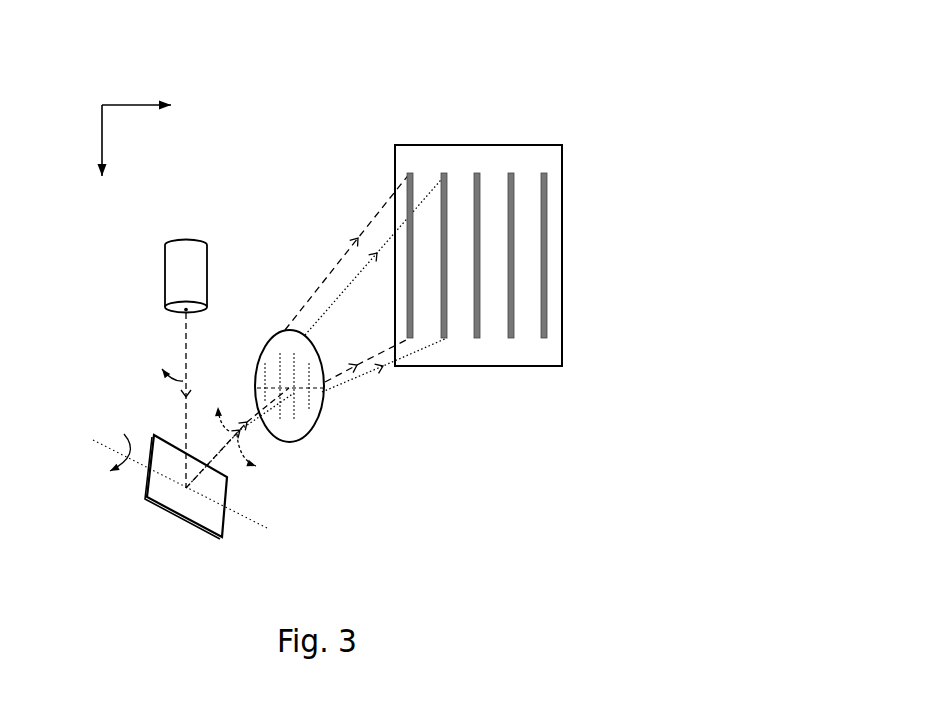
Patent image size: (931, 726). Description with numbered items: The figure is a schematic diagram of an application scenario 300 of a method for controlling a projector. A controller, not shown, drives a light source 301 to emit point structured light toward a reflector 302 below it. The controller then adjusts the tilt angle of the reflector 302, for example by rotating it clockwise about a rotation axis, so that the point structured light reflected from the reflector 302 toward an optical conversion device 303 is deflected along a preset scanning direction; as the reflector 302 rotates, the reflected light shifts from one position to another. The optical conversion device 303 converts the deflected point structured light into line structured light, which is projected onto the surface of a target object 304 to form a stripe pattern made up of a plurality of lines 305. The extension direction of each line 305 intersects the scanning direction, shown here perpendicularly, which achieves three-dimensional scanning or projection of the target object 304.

The application scenario 300 is at (565, 54).
The light source 301 is at (185, 238).
The reflector 302 is at (222, 540).
The optical conversion device 303 is at (322, 410).
The target object 304 is at (478, 251).
The line 305 is at (477, 340).